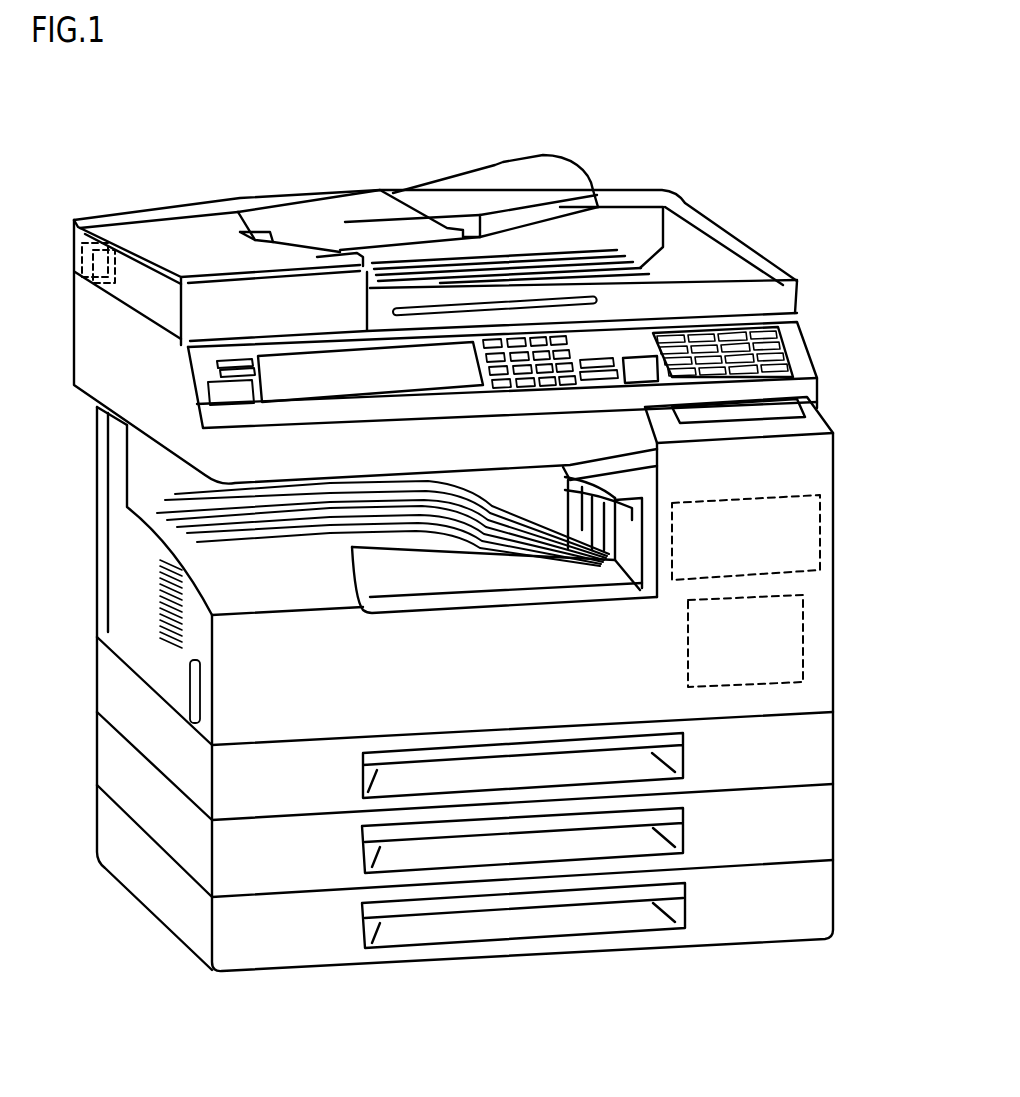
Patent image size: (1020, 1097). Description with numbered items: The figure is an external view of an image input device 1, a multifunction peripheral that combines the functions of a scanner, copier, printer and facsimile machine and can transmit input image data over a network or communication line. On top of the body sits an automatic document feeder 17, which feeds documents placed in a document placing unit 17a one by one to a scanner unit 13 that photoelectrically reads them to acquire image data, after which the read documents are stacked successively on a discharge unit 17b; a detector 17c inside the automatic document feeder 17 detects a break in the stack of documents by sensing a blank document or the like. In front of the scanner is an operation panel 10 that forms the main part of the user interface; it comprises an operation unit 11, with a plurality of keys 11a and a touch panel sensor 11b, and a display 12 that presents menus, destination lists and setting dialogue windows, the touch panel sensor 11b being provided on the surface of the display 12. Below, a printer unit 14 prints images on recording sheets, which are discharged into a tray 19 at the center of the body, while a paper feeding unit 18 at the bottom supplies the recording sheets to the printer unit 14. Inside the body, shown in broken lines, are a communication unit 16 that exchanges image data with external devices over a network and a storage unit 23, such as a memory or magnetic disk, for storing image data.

The image input device 1 is at (80, 142).
The operation panel 10 is at (795, 346).
The operation unit 11 is at (598, 350).
The keys 11a is at (560, 385).
The touch panel sensor 11b is at (368, 378).
The display 12 is at (305, 378).
The scanner unit 13 is at (65, 270).
The printer unit 14 is at (836, 578).
The communication unit 16 is at (805, 643).
The automatic document feeder 17 is at (150, 207).
The document placing unit 17a is at (310, 228).
The discharge unit 17b is at (618, 277).
The detector 17c is at (97, 233).
The paper feeding unit 18 is at (113, 838).
The tray 19 is at (135, 519).
The storage unit 23 is at (822, 531).